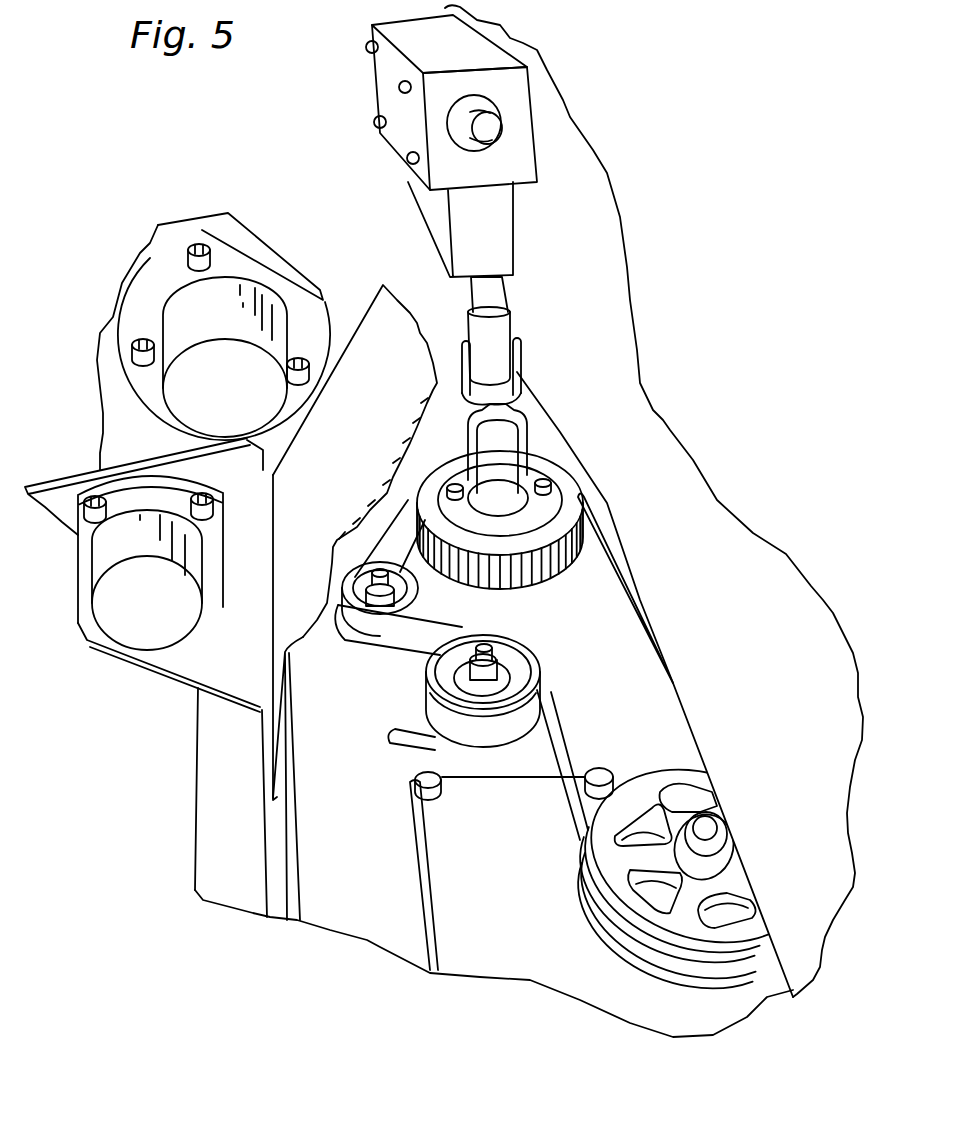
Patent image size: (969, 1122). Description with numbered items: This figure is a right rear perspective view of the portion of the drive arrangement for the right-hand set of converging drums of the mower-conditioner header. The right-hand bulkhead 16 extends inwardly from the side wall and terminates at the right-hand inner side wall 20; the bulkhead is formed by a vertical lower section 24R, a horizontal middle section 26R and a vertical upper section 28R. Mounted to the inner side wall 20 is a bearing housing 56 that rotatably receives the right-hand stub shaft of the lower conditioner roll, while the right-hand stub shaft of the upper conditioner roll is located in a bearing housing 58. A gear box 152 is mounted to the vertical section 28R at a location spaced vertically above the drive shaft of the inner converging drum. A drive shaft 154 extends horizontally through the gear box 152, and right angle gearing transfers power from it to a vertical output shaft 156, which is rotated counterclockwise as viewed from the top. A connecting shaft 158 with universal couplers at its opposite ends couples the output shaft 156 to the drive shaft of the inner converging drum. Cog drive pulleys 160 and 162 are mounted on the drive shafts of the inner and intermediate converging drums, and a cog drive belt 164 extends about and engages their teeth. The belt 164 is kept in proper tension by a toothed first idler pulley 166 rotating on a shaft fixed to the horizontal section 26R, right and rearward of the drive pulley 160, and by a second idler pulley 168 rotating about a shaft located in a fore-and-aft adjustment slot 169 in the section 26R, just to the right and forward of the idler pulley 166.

The right-hand bulkhead 16 is at (236, 813).
The right-hand inner side wall 20 is at (115, 432).
The vertical lower section 24R is at (290, 867).
The horizontal middle section 26R is at (380, 849).
The vertical upper section 28R is at (760, 636).
The bearing housing 56 is at (160, 617).
The bearing housing 58 is at (240, 400).
The gear box 152 is at (385, 80).
The drive shaft 154 is at (497, 112).
The vertical output shaft 156 is at (497, 297).
The connecting shaft 158 is at (508, 405).
The cog drive pulley 160 is at (587, 483).
The cog drive pulley 162 is at (643, 780).
The cog drive belt 164 is at (570, 835).
The first idler pulley 166 is at (437, 600).
The second idler pulley 168 is at (482, 740).
The fore-and-aft adjustment slot 169 is at (400, 730).